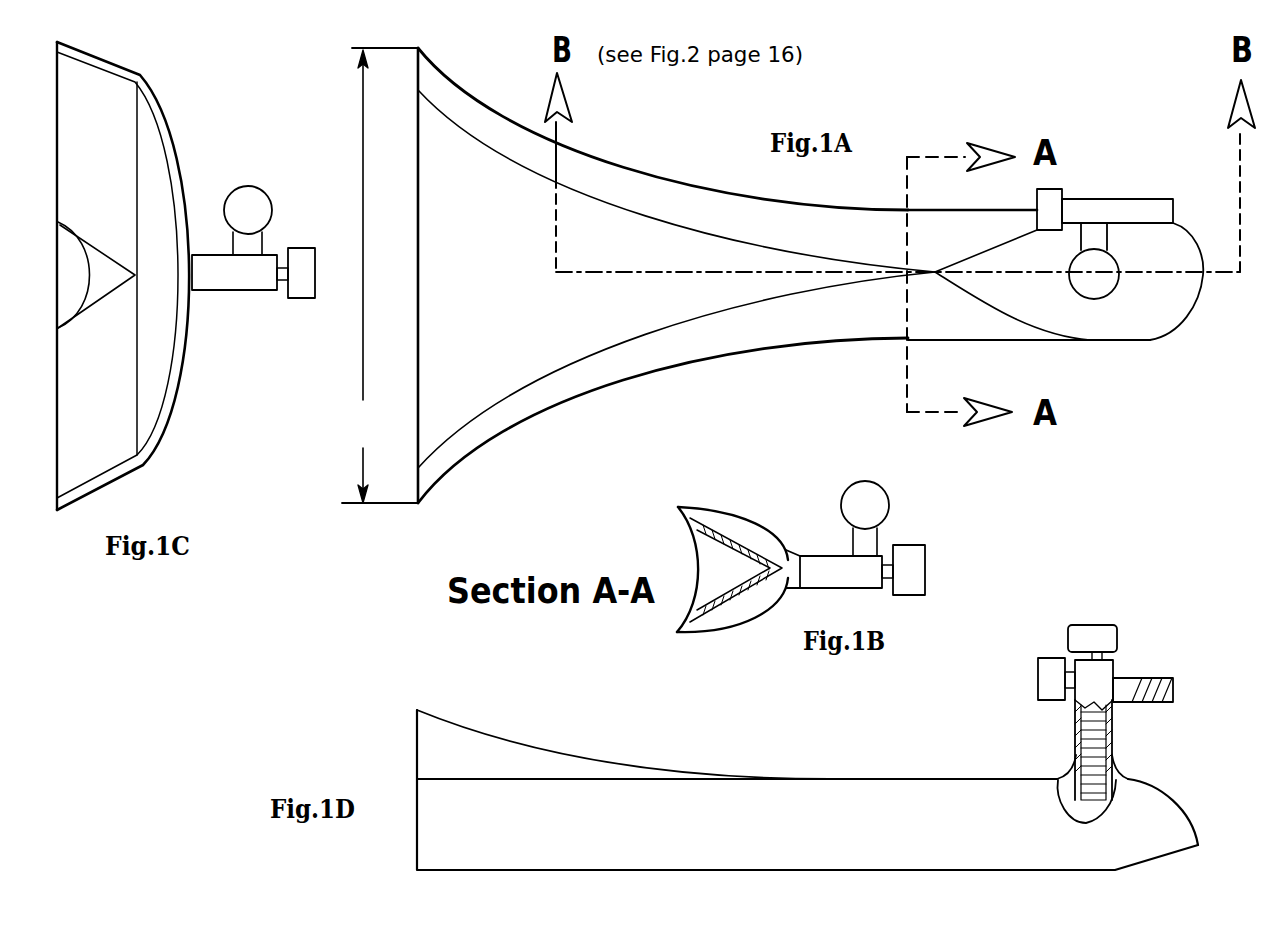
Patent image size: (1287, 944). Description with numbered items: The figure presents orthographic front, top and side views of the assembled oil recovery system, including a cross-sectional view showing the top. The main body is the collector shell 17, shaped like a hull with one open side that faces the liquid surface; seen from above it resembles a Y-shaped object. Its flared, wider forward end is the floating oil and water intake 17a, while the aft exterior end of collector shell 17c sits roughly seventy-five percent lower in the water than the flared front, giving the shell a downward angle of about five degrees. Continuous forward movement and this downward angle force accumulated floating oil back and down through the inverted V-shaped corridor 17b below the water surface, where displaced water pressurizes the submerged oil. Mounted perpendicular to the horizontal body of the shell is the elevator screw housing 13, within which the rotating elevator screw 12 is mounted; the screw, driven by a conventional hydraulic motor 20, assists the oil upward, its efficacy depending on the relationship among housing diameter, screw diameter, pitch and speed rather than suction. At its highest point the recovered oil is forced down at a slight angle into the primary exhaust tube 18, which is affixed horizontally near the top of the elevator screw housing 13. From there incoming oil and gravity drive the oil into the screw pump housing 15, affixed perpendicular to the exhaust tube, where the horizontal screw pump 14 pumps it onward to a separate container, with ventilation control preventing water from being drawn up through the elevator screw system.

In FIG. 1D, the elevator screw 12 is at (1078, 795).
In FIG. 1B, the elevator screw housing 13 is at (835, 553).
In FIG. 1C, the elevator screw housing 13 is at (210, 293).
In FIG. 1D, the horizontal screw pump 14 is at (1153, 703).
In FIG. 1A, the screw pump housing 15 is at (1157, 197).
In FIG. 1D, the collector shell 17 is at (635, 760).
In FIG. 1A, the floating oil and water intake 17a is at (380, 275).
In FIG. 1B, the inverted V-shaped corridor 17b is at (733, 600).
In FIG. 1A, the exterior end of collector shell 17c is at (1153, 343).
In FIG. 1A, the primary exhaust tube 18 is at (1105, 237).
In FIG. 1B, the hydraulic motor 20 is at (848, 488).
In FIG. 1C, the hydraulic motor 20 is at (305, 250).
In FIG. 1D, the hydraulic motor 20 is at (1038, 672).